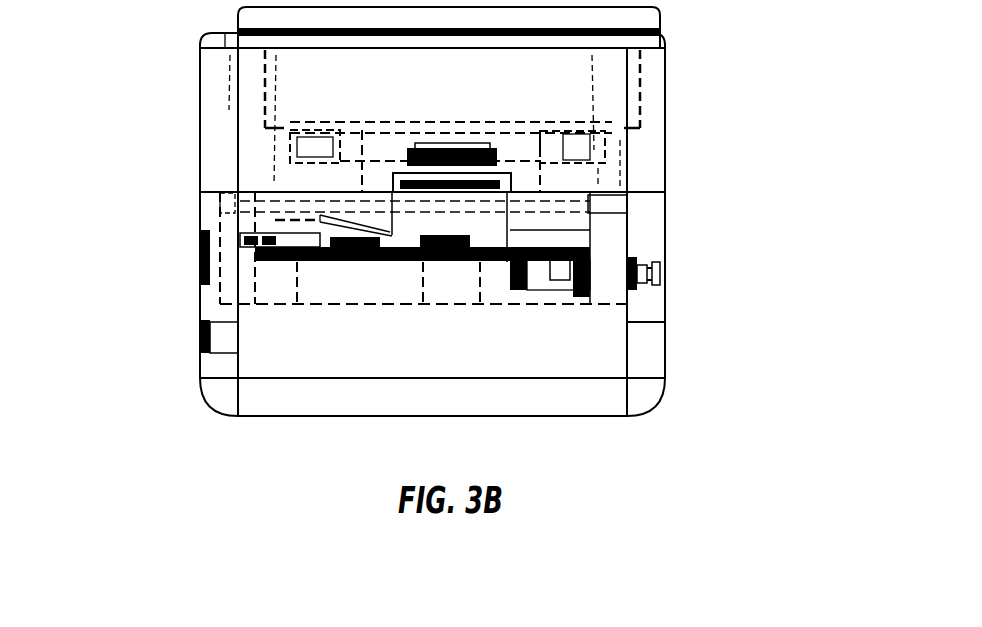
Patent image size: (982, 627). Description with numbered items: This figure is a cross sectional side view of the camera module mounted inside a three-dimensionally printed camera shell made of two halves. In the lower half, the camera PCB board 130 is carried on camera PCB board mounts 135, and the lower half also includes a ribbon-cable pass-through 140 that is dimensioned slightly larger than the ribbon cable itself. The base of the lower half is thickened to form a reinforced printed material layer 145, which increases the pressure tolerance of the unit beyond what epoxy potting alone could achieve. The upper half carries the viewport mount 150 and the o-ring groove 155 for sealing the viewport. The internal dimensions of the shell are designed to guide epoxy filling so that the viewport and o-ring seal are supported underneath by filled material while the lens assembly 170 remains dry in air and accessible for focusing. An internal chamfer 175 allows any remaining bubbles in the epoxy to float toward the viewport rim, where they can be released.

The camera PCB board 130 is at (308, 240).
The camera PCB board mounts 135 is at (437, 280).
The ribbon-cable pass-through 140 is at (655, 268).
The reinforced 3D-printed material layer 145 is at (588, 343).
The viewport mount 150 is at (550, 72).
The o-ring groove 155 is at (585, 137).
The lens assembly 170 is at (473, 173).
The internal chamfer 175 is at (327, 203).